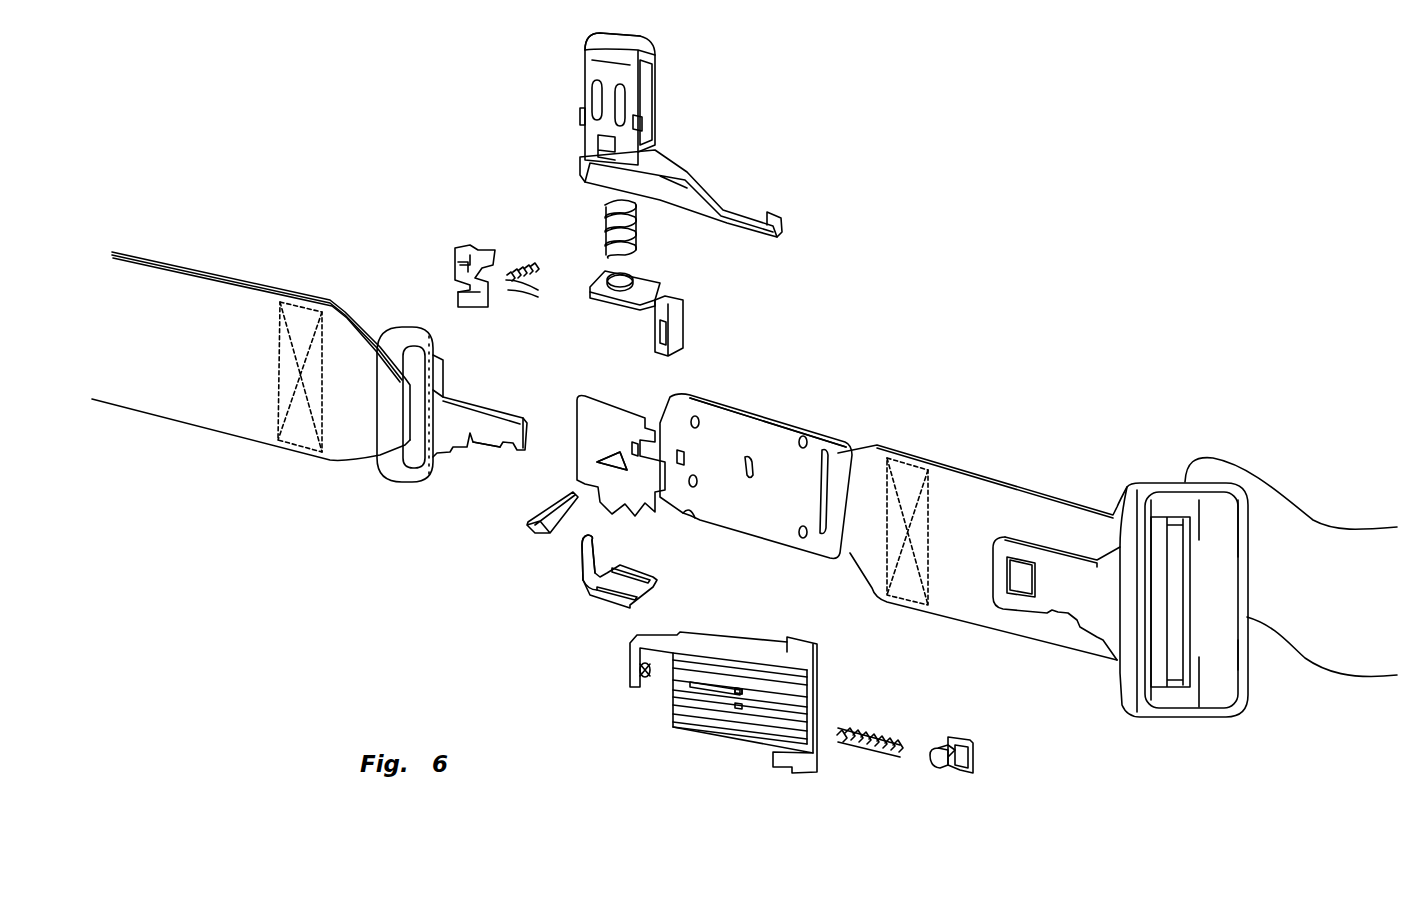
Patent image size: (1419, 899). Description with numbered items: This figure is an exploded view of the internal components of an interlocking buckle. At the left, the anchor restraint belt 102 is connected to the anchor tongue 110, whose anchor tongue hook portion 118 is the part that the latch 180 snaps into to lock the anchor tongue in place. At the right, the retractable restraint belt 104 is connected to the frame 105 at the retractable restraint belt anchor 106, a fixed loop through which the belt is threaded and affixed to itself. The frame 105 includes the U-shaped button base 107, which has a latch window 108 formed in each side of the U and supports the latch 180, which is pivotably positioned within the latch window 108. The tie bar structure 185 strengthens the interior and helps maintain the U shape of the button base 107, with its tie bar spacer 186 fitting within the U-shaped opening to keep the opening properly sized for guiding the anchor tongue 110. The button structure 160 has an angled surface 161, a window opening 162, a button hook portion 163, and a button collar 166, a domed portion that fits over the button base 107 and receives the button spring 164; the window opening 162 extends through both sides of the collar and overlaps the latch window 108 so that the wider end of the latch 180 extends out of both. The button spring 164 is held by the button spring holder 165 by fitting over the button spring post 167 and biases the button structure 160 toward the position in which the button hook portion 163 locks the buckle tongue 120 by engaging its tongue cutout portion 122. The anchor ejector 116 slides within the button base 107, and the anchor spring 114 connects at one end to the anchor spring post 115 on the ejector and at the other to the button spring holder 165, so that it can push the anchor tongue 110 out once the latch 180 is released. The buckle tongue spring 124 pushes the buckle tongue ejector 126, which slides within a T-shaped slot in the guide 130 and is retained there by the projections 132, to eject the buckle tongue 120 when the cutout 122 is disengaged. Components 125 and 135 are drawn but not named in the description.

The anchor restraint belt 102 is at (218, 370).
The retractable restraint belt 104 is at (1346, 610).
The frame 105 is at (812, 410).
The retractable restraint belt anchor 106 is at (842, 443).
The button base 107 is at (590, 425).
The latch window 108 is at (606, 450).
The anchor tongue 110 is at (469, 431).
The anchor spring 114 is at (522, 272).
The anchor spring post 115 is at (464, 270).
The anchor ejector 116 is at (455, 246).
The anchor tongue hook portion 118 is at (520, 458).
The buckle tongue 120 is at (1093, 600).
The tongue cutout portion 122 is at (1062, 548).
The buckle tongue spring 124 is at (868, 756).
The button 125 is at (930, 762).
The buckle tongue ejector 126 is at (963, 772).
The guide 130 is at (655, 718).
The projections 132 is at (740, 708).
The pin 135 is at (657, 676).
The button structure 160 is at (675, 103).
The angled surface 161 is at (720, 184).
The window opening 162 is at (583, 135).
The button hook portion 163 is at (790, 213).
The button spring 164 is at (642, 238).
The button spring holder 165 is at (693, 312).
The button collar 166 is at (643, 36).
The button spring post 167 is at (607, 290).
The latch 180 is at (528, 518).
The tie bar structure 185 is at (590, 600).
The tie bar spacer 186 is at (580, 552).